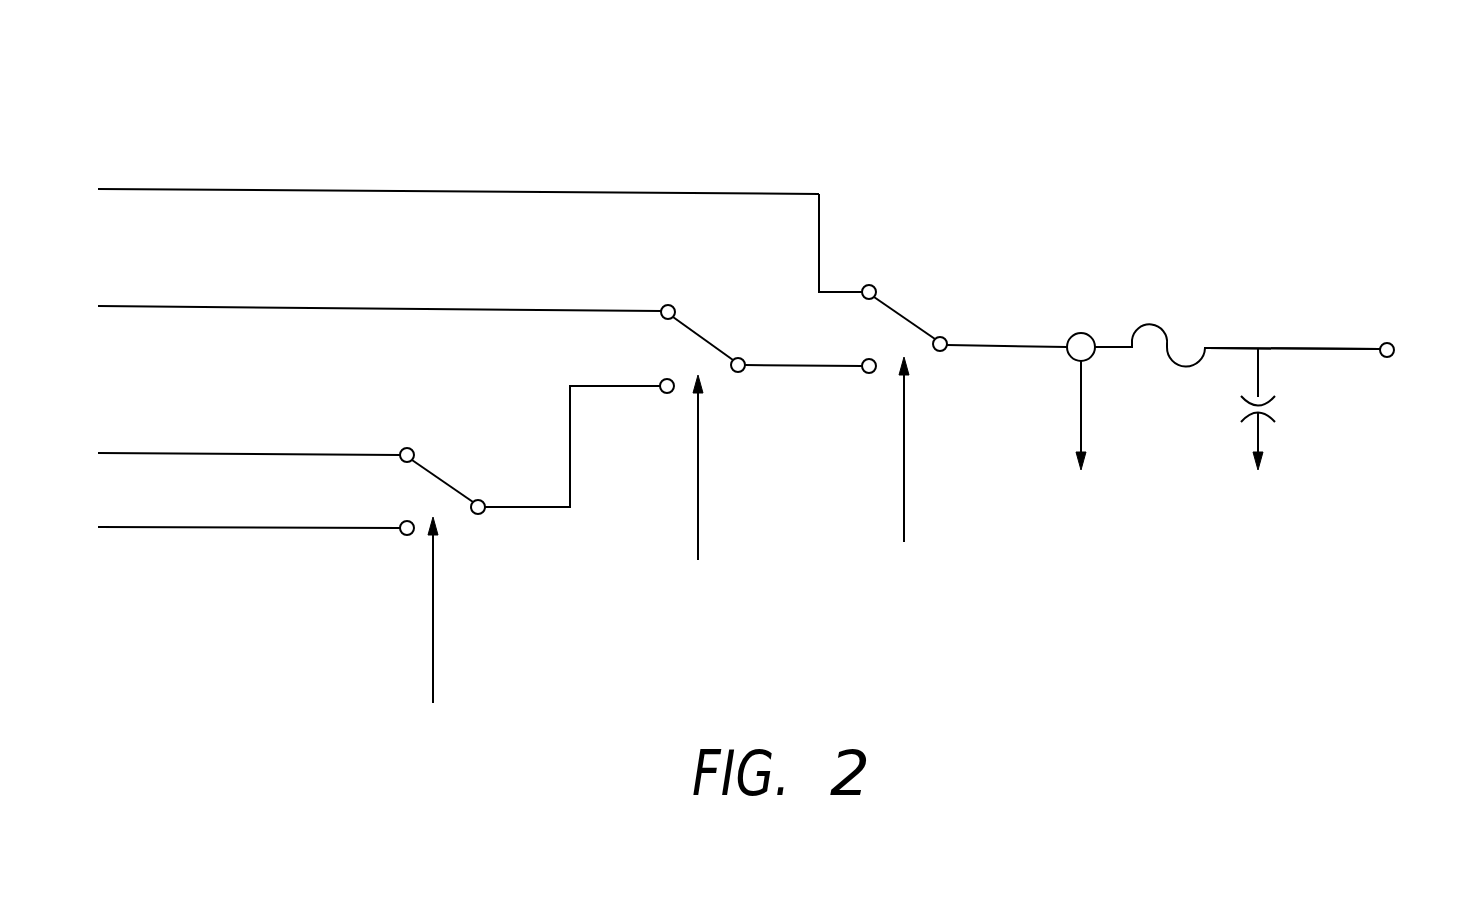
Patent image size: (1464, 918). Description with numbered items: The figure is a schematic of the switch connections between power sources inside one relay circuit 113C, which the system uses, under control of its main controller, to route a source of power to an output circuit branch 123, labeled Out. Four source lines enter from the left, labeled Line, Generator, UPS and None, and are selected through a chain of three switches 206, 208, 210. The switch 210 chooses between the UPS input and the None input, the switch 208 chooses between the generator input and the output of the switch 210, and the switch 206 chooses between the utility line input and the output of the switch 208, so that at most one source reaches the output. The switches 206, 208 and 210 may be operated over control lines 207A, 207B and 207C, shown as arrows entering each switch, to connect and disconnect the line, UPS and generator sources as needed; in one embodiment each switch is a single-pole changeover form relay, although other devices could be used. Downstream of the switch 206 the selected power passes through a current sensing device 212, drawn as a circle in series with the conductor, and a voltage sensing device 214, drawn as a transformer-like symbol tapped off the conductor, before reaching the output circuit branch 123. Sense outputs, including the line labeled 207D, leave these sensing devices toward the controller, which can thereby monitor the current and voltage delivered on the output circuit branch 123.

The relay circuit 113C is at (1040, 87).
The switch 206 is at (892, 310).
The switch 208 is at (689, 322).
The switch 210 is at (427, 466).
The current sensing device 212 is at (1091, 335).
The voltage sensing device 214 is at (1258, 447).
The output circuit branch 123 is at (1304, 348).
The control line 207A is at (433, 598).
The control line 207B is at (698, 468).
The control line 207C is at (904, 455).
The sensor output signal D 207D is at (1081, 413).